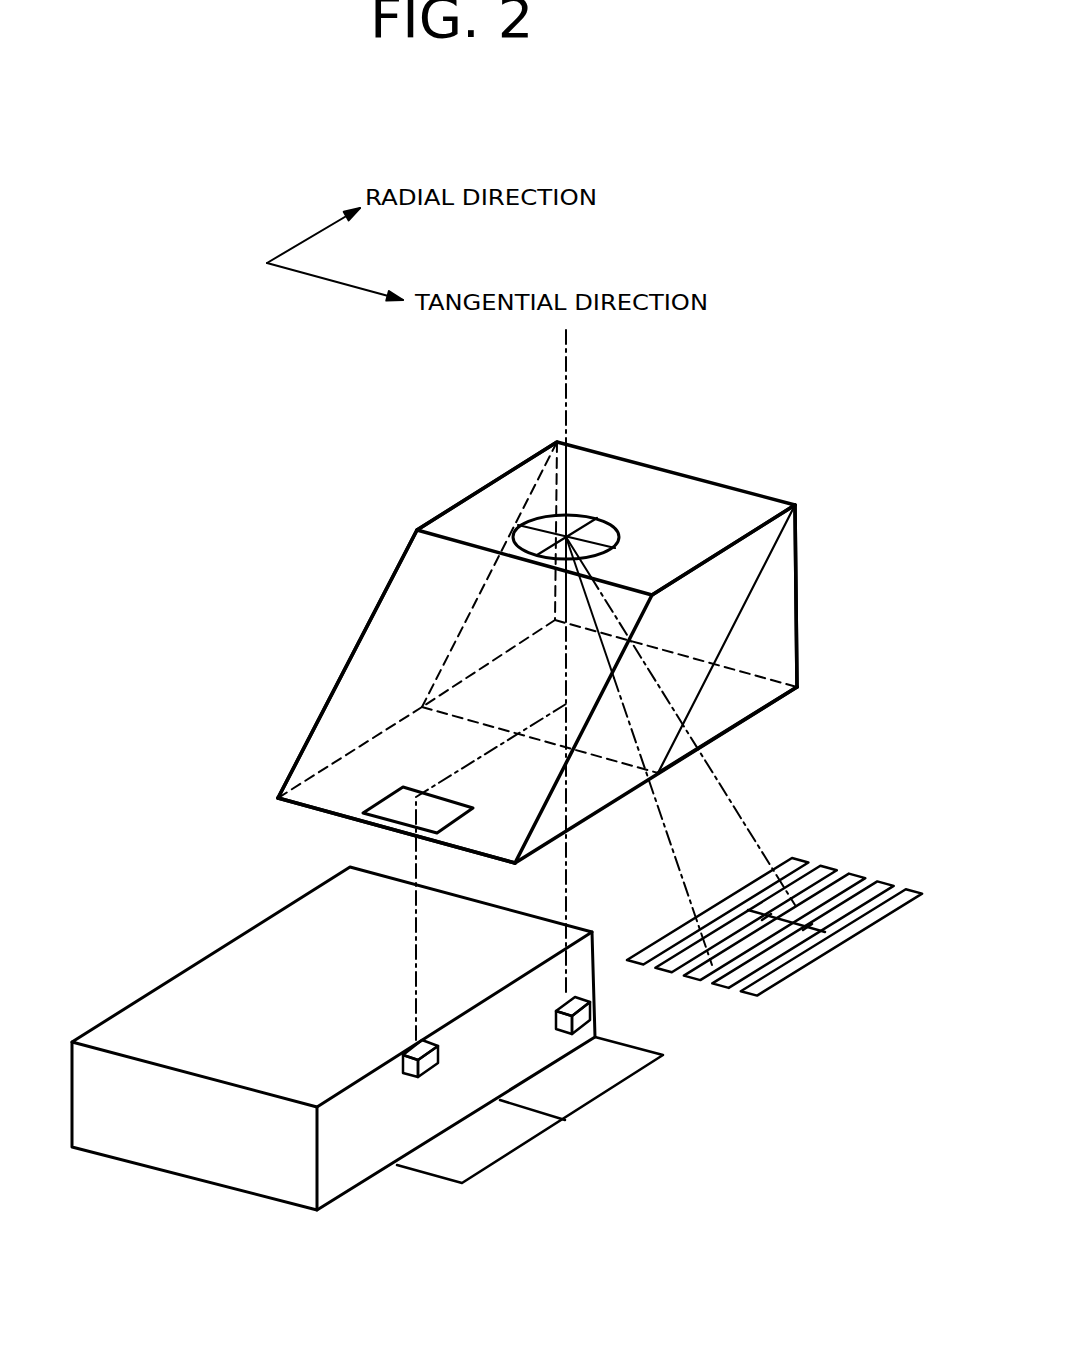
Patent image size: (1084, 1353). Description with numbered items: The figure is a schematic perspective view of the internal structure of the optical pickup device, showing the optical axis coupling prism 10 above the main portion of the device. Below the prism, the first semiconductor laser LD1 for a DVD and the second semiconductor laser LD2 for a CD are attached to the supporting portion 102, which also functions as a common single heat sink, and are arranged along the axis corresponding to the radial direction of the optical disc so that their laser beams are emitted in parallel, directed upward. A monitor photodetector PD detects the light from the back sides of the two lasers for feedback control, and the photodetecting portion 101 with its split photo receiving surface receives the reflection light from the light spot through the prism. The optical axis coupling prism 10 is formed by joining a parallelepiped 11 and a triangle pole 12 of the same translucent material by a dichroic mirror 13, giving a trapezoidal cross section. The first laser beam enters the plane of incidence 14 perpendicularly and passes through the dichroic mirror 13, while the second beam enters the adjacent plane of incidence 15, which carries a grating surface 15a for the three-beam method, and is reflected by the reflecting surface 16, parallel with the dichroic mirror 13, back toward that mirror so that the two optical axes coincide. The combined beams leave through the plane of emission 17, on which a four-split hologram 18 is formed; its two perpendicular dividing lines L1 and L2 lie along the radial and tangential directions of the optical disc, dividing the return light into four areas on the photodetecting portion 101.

The optical axis coupling prism 10 is at (360, 473).
The parallelepiped 11 is at (512, 468).
The triangle pole 12 is at (788, 652).
The dichroic mirror 13 is at (763, 577).
The plane of incidence 14 is at (767, 730).
The plane of incidence 15 is at (339, 822).
The grating surface 15a is at (428, 818).
The reflecting surface 16 is at (358, 674).
The plane of emission 17 is at (758, 522).
The 4-split hologram 18 is at (612, 528).
The dividing line L1 is at (597, 517).
The dividing line L2 is at (518, 525).
The photodetecting portion 101 is at (858, 856).
The supporting portion 102 is at (178, 1158).
The semiconductor laser LD1 is at (578, 1013).
The semiconductor laser LD2 is at (423, 1063).
The monitor photodetector PD is at (565, 1120).